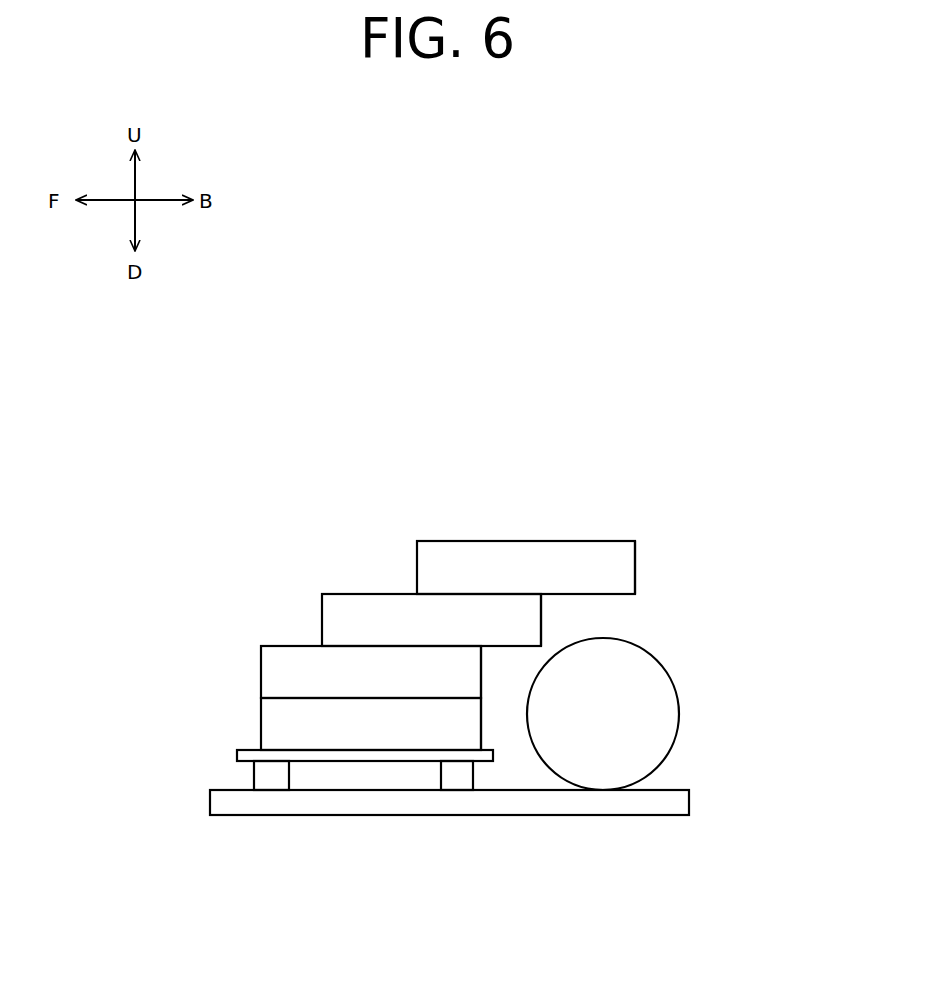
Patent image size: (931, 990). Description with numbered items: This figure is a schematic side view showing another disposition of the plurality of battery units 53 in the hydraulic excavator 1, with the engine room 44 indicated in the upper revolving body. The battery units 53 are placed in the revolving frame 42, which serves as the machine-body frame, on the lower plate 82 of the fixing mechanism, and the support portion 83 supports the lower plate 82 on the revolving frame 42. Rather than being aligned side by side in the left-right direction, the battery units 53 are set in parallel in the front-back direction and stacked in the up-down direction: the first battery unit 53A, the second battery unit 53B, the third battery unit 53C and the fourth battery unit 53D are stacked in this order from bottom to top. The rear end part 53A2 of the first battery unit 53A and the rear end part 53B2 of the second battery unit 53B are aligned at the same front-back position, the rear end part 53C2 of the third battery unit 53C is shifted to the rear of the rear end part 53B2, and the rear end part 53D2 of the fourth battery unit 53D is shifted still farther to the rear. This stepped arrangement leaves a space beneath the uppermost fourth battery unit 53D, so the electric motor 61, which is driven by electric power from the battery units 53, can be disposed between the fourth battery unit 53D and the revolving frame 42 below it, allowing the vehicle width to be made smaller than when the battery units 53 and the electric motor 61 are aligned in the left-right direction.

The hydraulic excavator 1 is at (744, 397).
The engine room 44 is at (228, 488).
The battery unit 53 is at (363, 645).
The fourth battery unit 53D is at (442, 562).
The third battery unit 53C is at (345, 618).
The second battery unit 53B is at (282, 670).
The first battery unit 53A is at (282, 727).
The rear end part of the second battery unit 53B2 is at (481, 668).
The rear end part of the fourth battery unit 53D2 is at (635, 568).
The rear end part of the third battery unit 53C2 is at (541, 620).
The rear end part of the first battery unit 53A2 is at (482, 727).
The lower plate 82 is at (338, 761).
The support portion 83 is at (271, 778).
The revolving frame 42 is at (407, 803).
The electric motor 61 is at (658, 723).